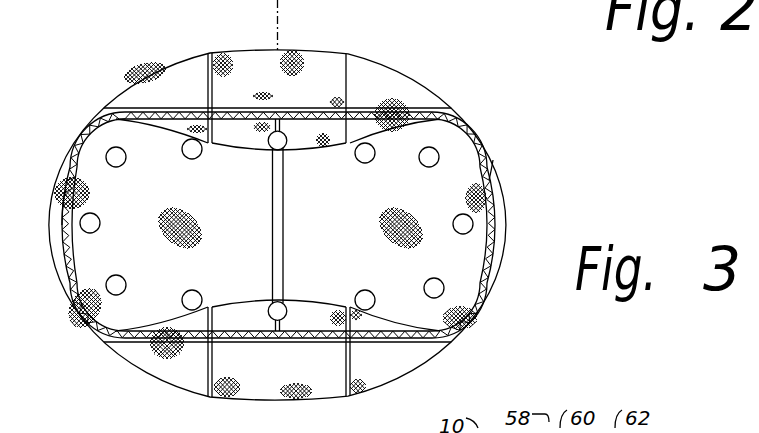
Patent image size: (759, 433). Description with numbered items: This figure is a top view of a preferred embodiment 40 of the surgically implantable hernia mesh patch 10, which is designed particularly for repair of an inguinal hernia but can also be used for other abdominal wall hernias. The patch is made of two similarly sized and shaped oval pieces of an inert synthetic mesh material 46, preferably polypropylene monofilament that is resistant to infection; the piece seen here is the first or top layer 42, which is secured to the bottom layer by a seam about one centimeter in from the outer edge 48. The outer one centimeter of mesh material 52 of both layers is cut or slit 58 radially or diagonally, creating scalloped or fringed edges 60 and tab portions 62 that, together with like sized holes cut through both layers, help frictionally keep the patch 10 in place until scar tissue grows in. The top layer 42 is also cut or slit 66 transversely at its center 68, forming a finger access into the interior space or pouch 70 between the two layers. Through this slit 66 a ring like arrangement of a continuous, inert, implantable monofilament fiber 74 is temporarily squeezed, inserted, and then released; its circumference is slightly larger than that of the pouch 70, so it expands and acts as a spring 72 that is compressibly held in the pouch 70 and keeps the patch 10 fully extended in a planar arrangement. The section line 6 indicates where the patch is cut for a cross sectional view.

The hernia mesh patch 10 is at (139, 72).
The embodiment 40 is at (396, 67).
The first or top layer 42 is at (133, 373).
The synthetic mesh material 46 is at (500, 200).
The outer edge 48 is at (100, 343).
The outer one centimeter of mesh material 52 is at (500, 165).
The cut or slit 58 is at (208, 52).
The scalloped or fringed edges 60 is at (302, 50).
The tab portions 62 is at (246, 50).
The finger access slit 66 is at (271, 247).
The center 68 is at (279, 228).
The interior space or pouch 70 is at (281, 160).
The spring 72 is at (494, 240).
The monofilament fiber 74 is at (476, 296).
The section line 6 is at (278, 170).